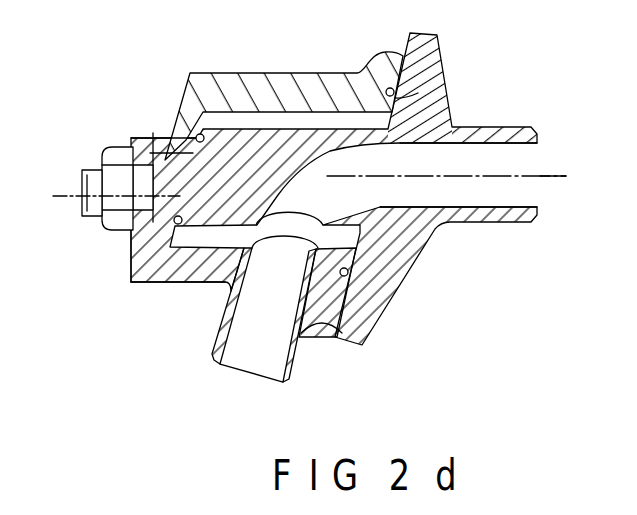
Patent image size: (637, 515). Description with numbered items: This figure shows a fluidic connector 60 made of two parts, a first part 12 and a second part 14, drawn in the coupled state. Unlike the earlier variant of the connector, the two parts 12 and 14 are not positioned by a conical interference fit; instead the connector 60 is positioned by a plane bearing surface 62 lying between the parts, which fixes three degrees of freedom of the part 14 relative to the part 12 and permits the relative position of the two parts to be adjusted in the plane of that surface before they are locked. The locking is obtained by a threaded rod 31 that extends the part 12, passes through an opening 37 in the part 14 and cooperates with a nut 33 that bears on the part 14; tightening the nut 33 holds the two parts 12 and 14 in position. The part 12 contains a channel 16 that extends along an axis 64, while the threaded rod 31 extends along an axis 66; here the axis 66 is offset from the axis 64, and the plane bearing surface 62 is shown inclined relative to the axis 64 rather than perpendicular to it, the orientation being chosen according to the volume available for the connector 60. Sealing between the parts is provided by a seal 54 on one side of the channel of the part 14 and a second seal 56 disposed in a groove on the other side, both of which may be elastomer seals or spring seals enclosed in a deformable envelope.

The first part 12 is at (407, 265).
The second part 14 is at (285, 84).
The channel 16 is at (486, 171).
The threaded rod 31 is at (82, 208).
The nut 33 is at (110, 153).
The opening 37 is at (138, 252).
The seal 54 is at (200, 137).
The second seal 56 is at (442, 75).
The fluidic connector 60 is at (147, 347).
The plane bearing surface 62 is at (322, 325).
The axis 64 is at (566, 176).
The axis 66 is at (65, 193).